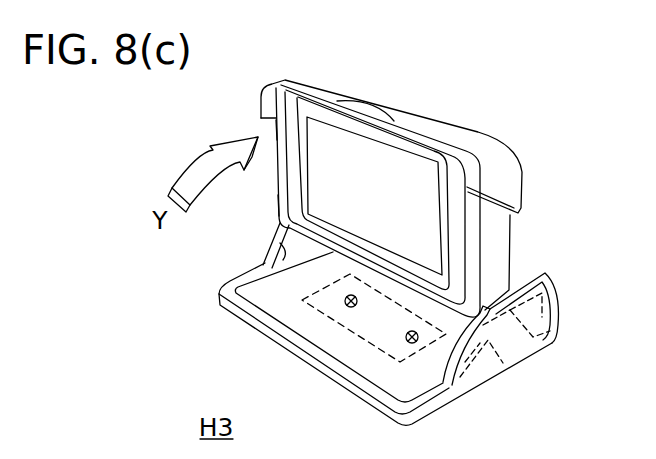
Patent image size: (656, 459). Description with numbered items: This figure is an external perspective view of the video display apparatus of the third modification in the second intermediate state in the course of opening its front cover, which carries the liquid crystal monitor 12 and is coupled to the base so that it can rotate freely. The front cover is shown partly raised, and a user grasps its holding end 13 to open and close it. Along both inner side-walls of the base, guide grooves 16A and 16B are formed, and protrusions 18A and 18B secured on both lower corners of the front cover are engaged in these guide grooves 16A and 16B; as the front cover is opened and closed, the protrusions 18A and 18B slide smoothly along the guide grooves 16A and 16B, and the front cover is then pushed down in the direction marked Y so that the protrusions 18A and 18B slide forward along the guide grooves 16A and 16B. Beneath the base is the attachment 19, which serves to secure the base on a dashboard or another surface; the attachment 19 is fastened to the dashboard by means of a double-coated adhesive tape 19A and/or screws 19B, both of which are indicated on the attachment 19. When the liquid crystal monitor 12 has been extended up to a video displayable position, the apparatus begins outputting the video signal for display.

The liquid crystal monitor 12 is at (293, 132).
The holding end 13 is at (395, 120).
The guide groove 16A is at (279, 246).
The guide groove 16B is at (506, 366).
The protrusion 18A is at (285, 205).
The protrusion 18B is at (530, 300).
The attachment 19 is at (323, 320).
The double-coated adhesive tape 19A is at (337, 323).
The screws 19B is at (356, 306).